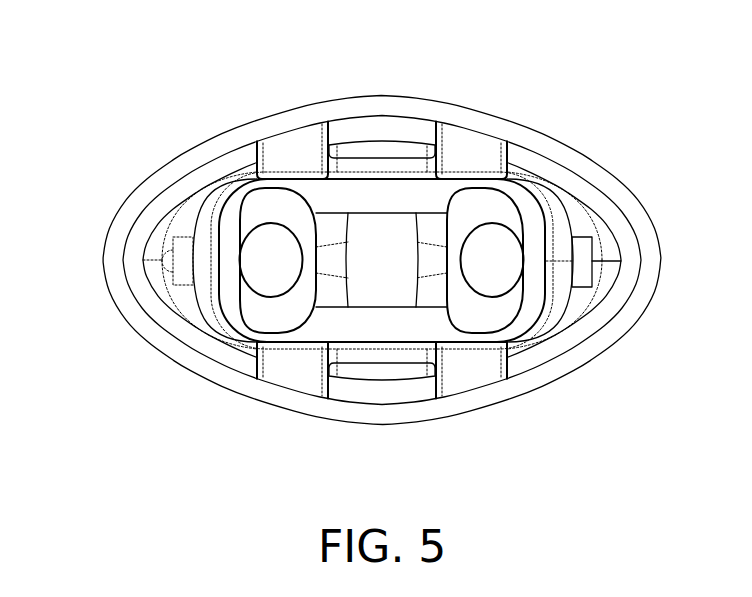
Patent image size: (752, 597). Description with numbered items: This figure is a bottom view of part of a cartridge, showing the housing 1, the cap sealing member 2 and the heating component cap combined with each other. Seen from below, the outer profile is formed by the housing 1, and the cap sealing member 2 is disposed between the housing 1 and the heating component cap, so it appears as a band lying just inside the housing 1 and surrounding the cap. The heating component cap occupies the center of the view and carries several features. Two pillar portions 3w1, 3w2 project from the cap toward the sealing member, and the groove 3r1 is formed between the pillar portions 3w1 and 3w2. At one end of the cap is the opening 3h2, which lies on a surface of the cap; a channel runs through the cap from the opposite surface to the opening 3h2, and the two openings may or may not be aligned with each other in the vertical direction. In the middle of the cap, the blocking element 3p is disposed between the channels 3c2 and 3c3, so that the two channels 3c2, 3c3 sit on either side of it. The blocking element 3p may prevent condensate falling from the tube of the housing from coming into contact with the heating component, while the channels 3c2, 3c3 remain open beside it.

The housing 1 is at (590, 167).
The cap sealing member 2 is at (610, 217).
The pillar portion 3w1 is at (294, 145).
The pillar portion 3w2 is at (465, 143).
The groove 3r1 is at (377, 150).
The opening 3h2 is at (163, 277).
The channel 3c2 is at (270, 270).
The channel 3c3 is at (505, 261).
The blocking element 3p is at (395, 282).